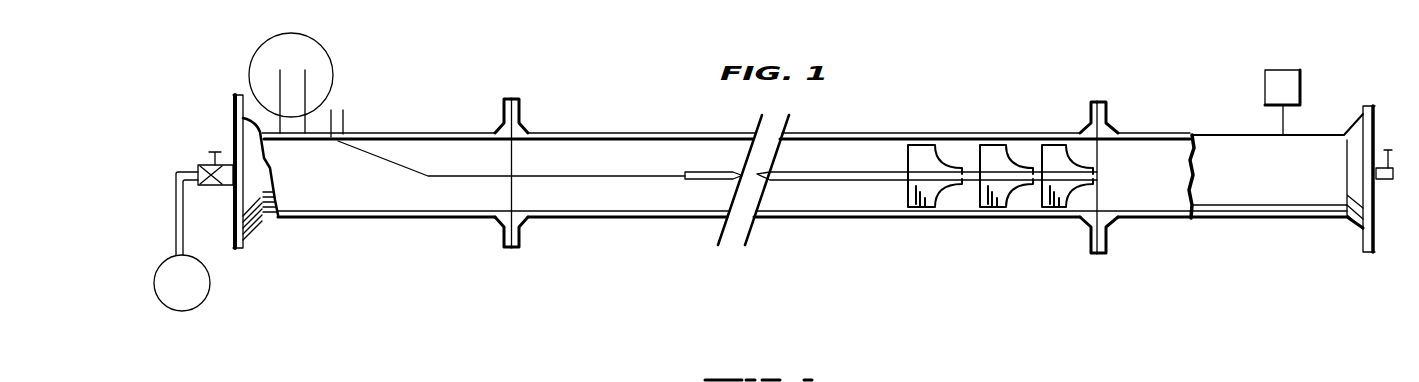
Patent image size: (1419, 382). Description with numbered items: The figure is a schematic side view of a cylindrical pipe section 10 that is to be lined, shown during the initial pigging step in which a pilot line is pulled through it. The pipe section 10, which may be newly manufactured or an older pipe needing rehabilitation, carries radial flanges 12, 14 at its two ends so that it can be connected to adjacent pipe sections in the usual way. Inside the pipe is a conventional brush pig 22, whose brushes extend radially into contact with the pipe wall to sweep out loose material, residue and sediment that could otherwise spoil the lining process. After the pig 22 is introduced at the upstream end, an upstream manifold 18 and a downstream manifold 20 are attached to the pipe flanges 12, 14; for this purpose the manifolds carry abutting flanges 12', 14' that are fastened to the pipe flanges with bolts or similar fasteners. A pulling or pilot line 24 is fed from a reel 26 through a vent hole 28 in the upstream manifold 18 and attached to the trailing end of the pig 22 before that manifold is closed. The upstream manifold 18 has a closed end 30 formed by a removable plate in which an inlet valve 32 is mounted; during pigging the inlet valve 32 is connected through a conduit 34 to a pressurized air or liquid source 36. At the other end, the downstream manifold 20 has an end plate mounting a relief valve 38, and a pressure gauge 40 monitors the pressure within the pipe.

The cylindrical pipe section 10 is at (891, 133).
The radial flange 12 is at (545, 165).
The abutting flange 12' is at (477, 164).
The radial flange 14 is at (1068, 177).
The abutting flange 14' is at (1129, 177).
The upstream manifold 18 is at (343, 218).
The downstream manifold 20 is at (1269, 214).
The brush pig 22 is at (878, 178).
The pilot line 24 is at (594, 176).
The reel 26 is at (247, 78).
The vent hole 28 is at (346, 131).
The closed end 30 is at (236, 108).
The inlet valve 32 is at (217, 152).
The conduit 34 is at (176, 230).
The pressurized air or liquid source 36 is at (156, 292).
The relief valve 38 is at (1378, 176).
The pressure gauge 40 is at (1268, 93).